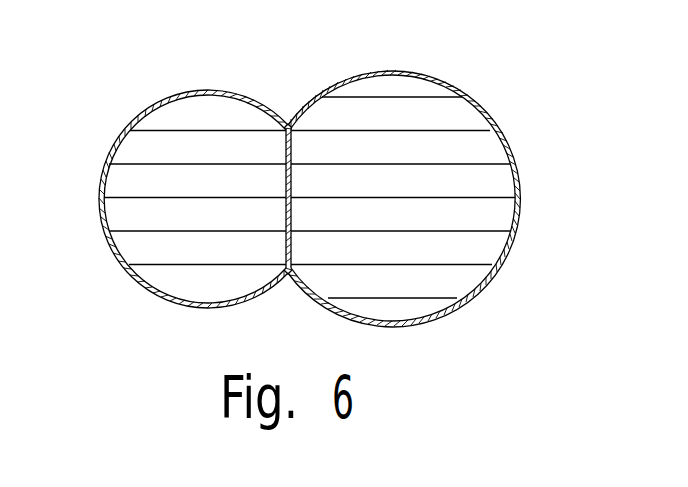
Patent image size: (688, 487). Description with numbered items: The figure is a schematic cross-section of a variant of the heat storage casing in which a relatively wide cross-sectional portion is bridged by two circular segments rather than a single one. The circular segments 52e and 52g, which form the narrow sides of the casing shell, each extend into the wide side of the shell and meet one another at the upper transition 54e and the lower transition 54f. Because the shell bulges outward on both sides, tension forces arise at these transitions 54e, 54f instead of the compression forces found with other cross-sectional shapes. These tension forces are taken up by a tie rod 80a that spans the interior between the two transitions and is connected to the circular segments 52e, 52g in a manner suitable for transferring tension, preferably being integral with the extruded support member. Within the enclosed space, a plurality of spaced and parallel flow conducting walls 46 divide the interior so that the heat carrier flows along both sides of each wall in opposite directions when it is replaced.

The flow conducting wall 46 is at (158, 163).
The circular segment 52e is at (237, 93).
The circular segment 52g is at (418, 75).
The transition between circular segments 54e is at (286, 121).
The transition between circular segments 54f is at (286, 277).
The tie rod 80a is at (292, 188).